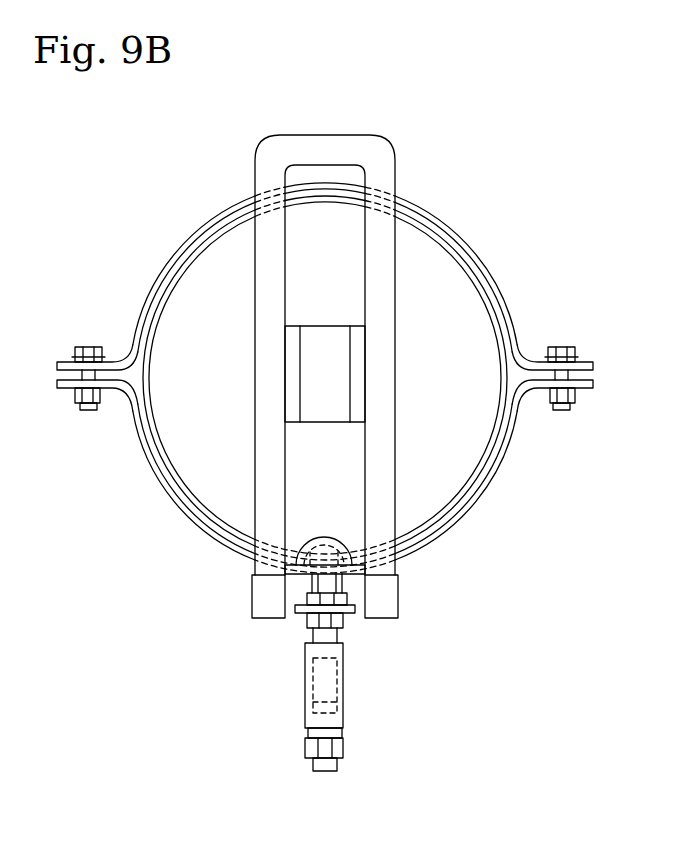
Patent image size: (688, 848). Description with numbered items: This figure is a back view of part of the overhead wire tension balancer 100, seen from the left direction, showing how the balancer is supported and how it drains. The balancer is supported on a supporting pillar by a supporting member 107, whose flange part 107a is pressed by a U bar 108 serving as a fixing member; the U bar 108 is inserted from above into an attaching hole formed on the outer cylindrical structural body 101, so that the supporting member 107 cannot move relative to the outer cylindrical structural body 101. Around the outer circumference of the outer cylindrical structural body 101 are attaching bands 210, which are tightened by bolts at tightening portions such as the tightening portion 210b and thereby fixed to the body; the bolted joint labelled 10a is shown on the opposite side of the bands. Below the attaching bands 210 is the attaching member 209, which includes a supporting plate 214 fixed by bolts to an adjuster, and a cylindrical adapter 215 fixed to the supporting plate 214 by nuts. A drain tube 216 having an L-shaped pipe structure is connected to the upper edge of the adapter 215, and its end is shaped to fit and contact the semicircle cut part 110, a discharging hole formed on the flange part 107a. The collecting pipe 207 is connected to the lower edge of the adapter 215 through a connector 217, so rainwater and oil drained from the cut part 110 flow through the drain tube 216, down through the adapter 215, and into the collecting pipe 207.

The overhead wire tension balancer 100 is at (325, 380).
The fastening bolt 10a is at (68, 343).
The outer cylindrical structural body 101 is at (167, 468).
The supporting member 107 is at (357, 342).
The flange part 107a is at (329, 371).
The U bar 108 is at (383, 152).
The semicircle cut part 110 is at (397, 553).
The collecting pipe 207 is at (330, 766).
The attaching member 209 is at (297, 632).
The attaching bands 210 is at (205, 532).
The tightening portion 210b is at (591, 402).
The supporting plate 214 is at (358, 605).
The cylindrical adapter 215 is at (328, 673).
The drain tube 216 is at (334, 538).
The connector 217 is at (306, 748).